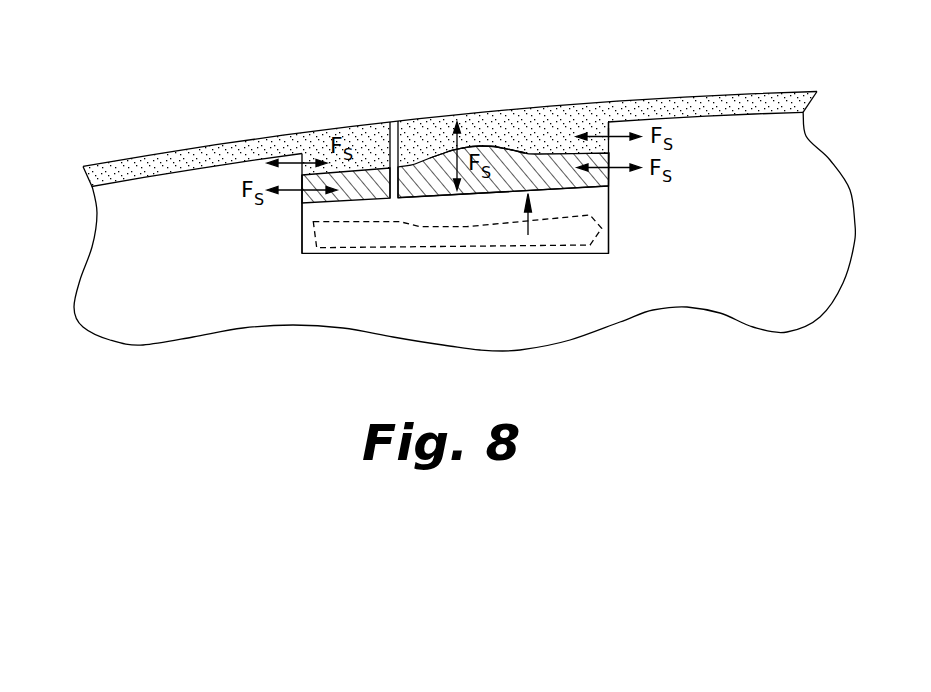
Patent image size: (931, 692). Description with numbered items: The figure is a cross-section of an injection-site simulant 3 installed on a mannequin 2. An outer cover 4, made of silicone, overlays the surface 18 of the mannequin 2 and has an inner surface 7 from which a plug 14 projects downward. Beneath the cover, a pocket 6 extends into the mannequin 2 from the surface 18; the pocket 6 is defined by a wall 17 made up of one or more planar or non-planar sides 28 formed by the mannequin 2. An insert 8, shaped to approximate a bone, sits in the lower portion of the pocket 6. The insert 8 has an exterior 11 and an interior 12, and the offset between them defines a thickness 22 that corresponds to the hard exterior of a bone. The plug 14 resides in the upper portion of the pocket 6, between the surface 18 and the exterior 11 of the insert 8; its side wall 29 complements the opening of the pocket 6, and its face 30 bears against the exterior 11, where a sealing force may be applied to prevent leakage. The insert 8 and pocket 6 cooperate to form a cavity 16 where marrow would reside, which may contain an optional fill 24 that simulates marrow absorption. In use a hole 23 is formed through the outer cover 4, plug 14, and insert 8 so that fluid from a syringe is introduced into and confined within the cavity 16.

The mannequin 2 is at (160, 298).
The injection-site simulant 3 is at (256, 99).
The outer cover 4 is at (734, 95).
The pocket 6 is at (609, 253).
The inner surface 7 is at (690, 117).
The insert 8 is at (362, 190).
The exterior 11 is at (516, 250).
The interior 12 is at (423, 193).
The plug 14 is at (423, 143).
The cavity 16 is at (468, 224).
The wall 17 is at (610, 128).
The surface 18 is at (122, 183).
The thickness 22 is at (528, 128).
The hole 23 is at (392, 130).
The fill 24 is at (582, 247).
The sides 28 is at (301, 223).
The side wall 29 is at (609, 129).
The face 30 is at (516, 250).